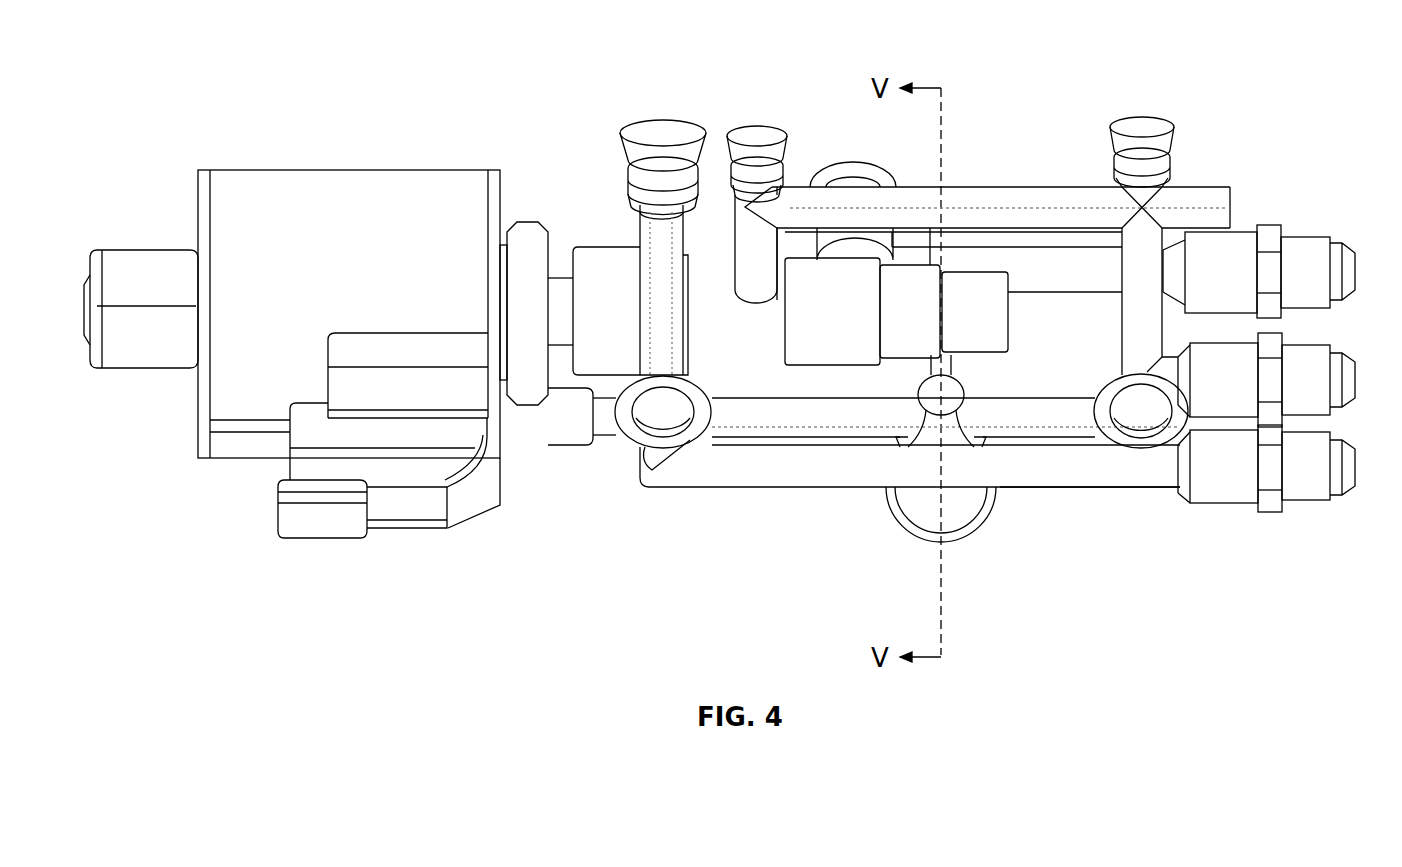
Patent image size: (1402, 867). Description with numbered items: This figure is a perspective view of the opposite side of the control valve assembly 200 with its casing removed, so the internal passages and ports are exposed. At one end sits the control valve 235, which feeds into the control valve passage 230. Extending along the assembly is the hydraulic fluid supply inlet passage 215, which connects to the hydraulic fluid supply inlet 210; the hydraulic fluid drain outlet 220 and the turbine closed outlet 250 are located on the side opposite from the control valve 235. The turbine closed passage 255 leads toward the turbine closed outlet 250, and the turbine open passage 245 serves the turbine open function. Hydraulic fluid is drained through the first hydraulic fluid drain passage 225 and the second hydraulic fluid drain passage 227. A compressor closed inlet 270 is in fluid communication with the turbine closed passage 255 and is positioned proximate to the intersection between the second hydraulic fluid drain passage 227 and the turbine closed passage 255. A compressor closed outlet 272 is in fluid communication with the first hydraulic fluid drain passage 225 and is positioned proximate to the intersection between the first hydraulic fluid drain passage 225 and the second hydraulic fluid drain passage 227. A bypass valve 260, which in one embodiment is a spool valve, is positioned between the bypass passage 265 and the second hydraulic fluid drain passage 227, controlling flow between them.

The control valve assembly 200 is at (823, 84).
The hydraulic fluid supply inlet 210 is at (1297, 257).
The hydraulic fluid supply inlet passage 215 is at (1043, 258).
The hydraulic fluid drain outlet 220 is at (1303, 483).
The first hydraulic fluid drain passage 225 is at (662, 300).
The second hydraulic fluid drain passage 227 is at (1072, 420).
The control valve passage 230 is at (607, 260).
The control valve 235 is at (315, 188).
The turbine open passage 245 is at (988, 297).
The turbine closed outlet 250 is at (1302, 352).
The turbine closed passage 255 is at (1055, 197).
The bypass valve 260 is at (935, 520).
The bypass passage 265 is at (938, 232).
The compressor closed inlet 270 is at (1140, 437).
The compressor closed outlet 272 is at (645, 438).